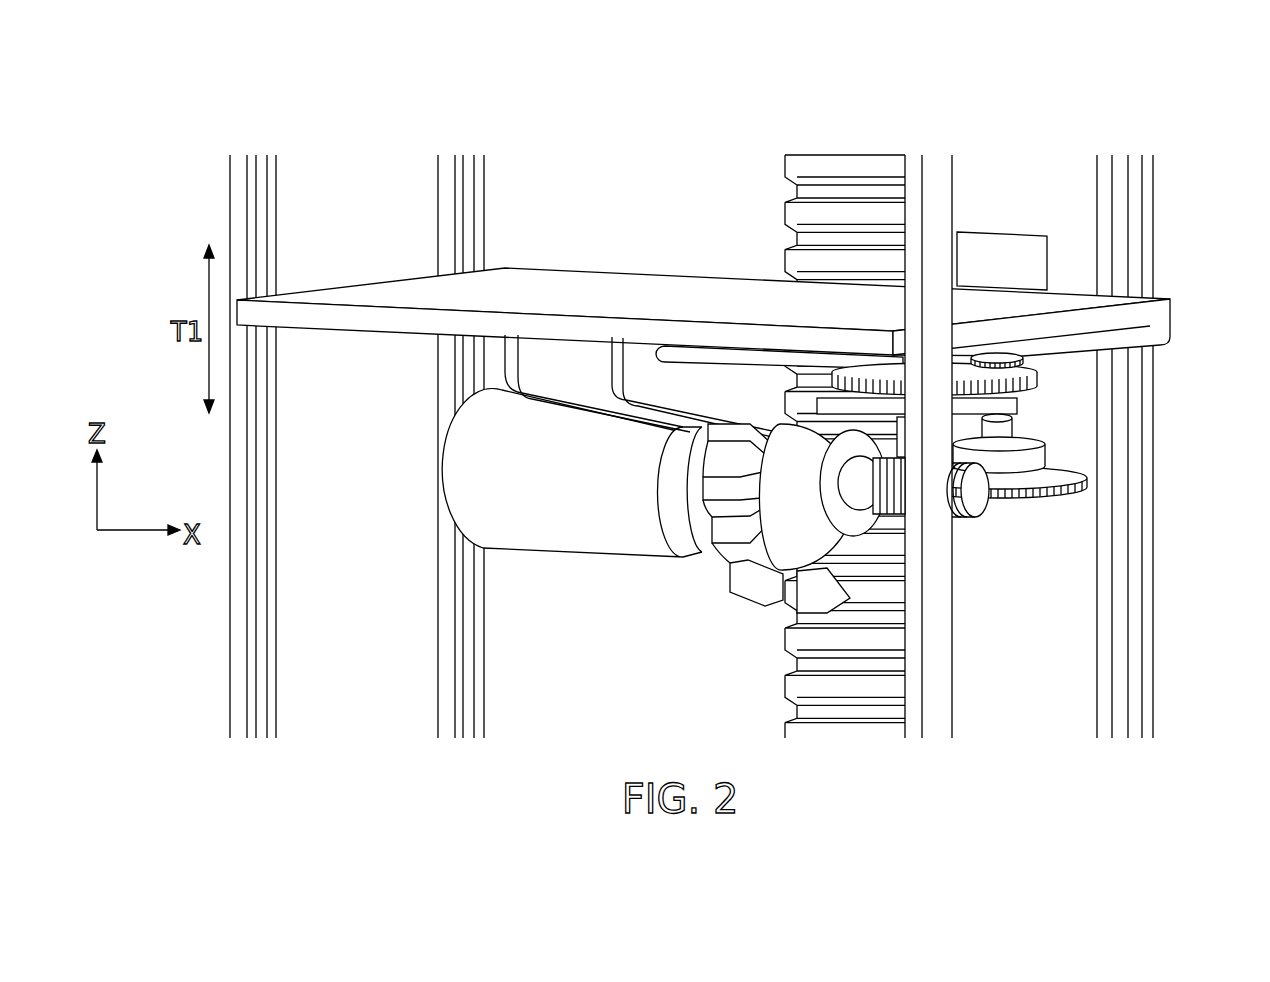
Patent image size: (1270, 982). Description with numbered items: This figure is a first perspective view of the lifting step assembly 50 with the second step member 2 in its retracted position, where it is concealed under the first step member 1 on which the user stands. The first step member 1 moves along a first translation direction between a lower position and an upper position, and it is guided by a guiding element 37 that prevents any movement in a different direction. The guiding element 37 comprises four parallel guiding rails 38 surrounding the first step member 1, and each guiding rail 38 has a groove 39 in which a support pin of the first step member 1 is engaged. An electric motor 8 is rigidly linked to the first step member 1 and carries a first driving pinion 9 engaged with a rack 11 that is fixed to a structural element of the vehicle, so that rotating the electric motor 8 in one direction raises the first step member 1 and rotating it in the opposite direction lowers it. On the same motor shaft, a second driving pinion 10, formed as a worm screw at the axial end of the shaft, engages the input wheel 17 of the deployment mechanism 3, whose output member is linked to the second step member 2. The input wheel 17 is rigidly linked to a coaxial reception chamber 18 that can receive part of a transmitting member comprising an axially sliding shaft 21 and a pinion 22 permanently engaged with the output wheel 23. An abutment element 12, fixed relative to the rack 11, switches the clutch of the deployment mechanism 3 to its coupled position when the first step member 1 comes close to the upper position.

The first step member 1 is at (463, 297).
The second step member 2 is at (1150, 337).
The deployment mechanism 3 is at (1036, 522).
The electric motor 8 is at (505, 472).
The first driving pinion 9 is at (757, 575).
The second driving pinion 10 is at (975, 500).
The rack 11 is at (835, 165).
The abutment element 12 is at (990, 258).
The input wheel 17 is at (1078, 490).
The reception chamber 18 is at (1033, 457).
The shaft 21 is at (1000, 427).
The pinion 22 is at (1023, 360).
The output wheel 23 is at (1037, 388).
The guiding element 37 is at (420, 627).
The guiding rails 38 is at (445, 665).
The groove 39 is at (258, 683).
The lifting step assembly 50 is at (758, 104).